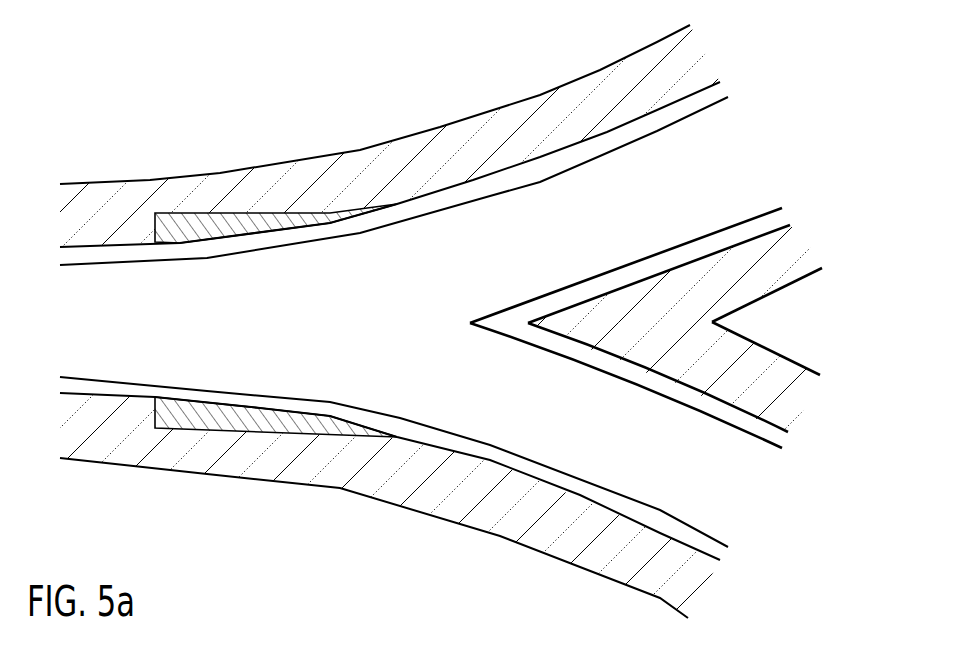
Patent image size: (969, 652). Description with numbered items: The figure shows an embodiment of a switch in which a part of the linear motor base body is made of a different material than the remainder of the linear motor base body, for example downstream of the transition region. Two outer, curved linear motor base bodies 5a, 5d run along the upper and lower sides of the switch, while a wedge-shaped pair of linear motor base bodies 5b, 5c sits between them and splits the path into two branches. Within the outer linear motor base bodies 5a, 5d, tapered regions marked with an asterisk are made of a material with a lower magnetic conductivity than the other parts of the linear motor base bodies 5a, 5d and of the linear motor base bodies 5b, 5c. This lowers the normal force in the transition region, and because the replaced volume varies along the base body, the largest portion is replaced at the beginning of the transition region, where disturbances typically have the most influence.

The linear motor base body 5a is at (590, 78).
The linear motor base body 5b is at (781, 265).
The linear motor base body 5c is at (783, 373).
The linear motor base body 5d is at (591, 562).